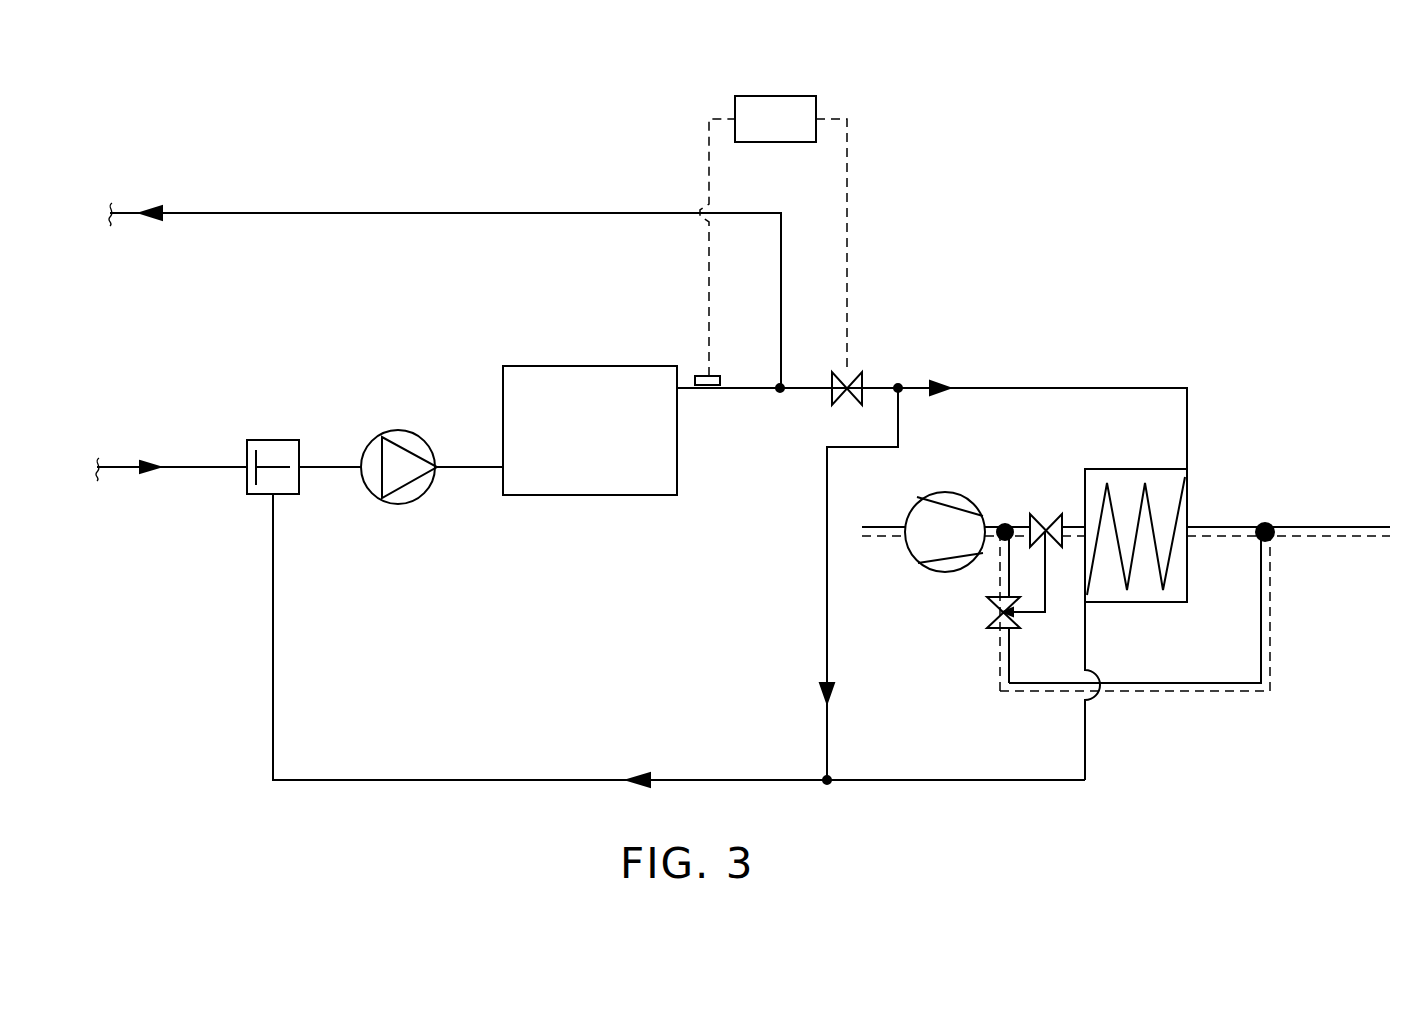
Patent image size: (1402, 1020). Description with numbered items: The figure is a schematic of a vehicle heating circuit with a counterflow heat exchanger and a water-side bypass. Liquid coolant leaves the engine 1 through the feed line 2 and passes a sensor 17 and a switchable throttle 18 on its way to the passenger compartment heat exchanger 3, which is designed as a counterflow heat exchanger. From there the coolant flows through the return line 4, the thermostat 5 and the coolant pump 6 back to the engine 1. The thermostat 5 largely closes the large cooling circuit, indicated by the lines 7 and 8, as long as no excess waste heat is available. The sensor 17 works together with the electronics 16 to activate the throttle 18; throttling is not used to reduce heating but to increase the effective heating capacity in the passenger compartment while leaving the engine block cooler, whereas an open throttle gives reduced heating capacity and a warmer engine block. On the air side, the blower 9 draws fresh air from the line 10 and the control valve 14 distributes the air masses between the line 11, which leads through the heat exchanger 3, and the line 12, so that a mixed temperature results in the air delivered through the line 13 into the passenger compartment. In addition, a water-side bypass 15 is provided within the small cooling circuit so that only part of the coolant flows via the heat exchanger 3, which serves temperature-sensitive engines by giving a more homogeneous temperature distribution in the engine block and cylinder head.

The engine 1 is at (626, 496).
The feed line 2 is at (1030, 388).
The passenger compartment heat exchanger 3 is at (1134, 469).
The return line 4 is at (532, 780).
The thermostat 5 is at (272, 440).
The coolant pump 6 is at (400, 431).
The large cooling circuit line 7 is at (120, 467).
The large cooling circuit line 8 is at (124, 211).
The blower 9 is at (940, 492).
The fresh-air line 10 is at (880, 525).
The air line 11 is at (1050, 514).
The air line 12 is at (1040, 692).
The air line 13 is at (1300, 529).
The control valve 14 is at (1022, 615).
The water-side bypass 15 is at (827, 588).
The electronics 16 is at (798, 96).
The sensor 17 is at (710, 386).
The switchable throttle 18 is at (832, 396).